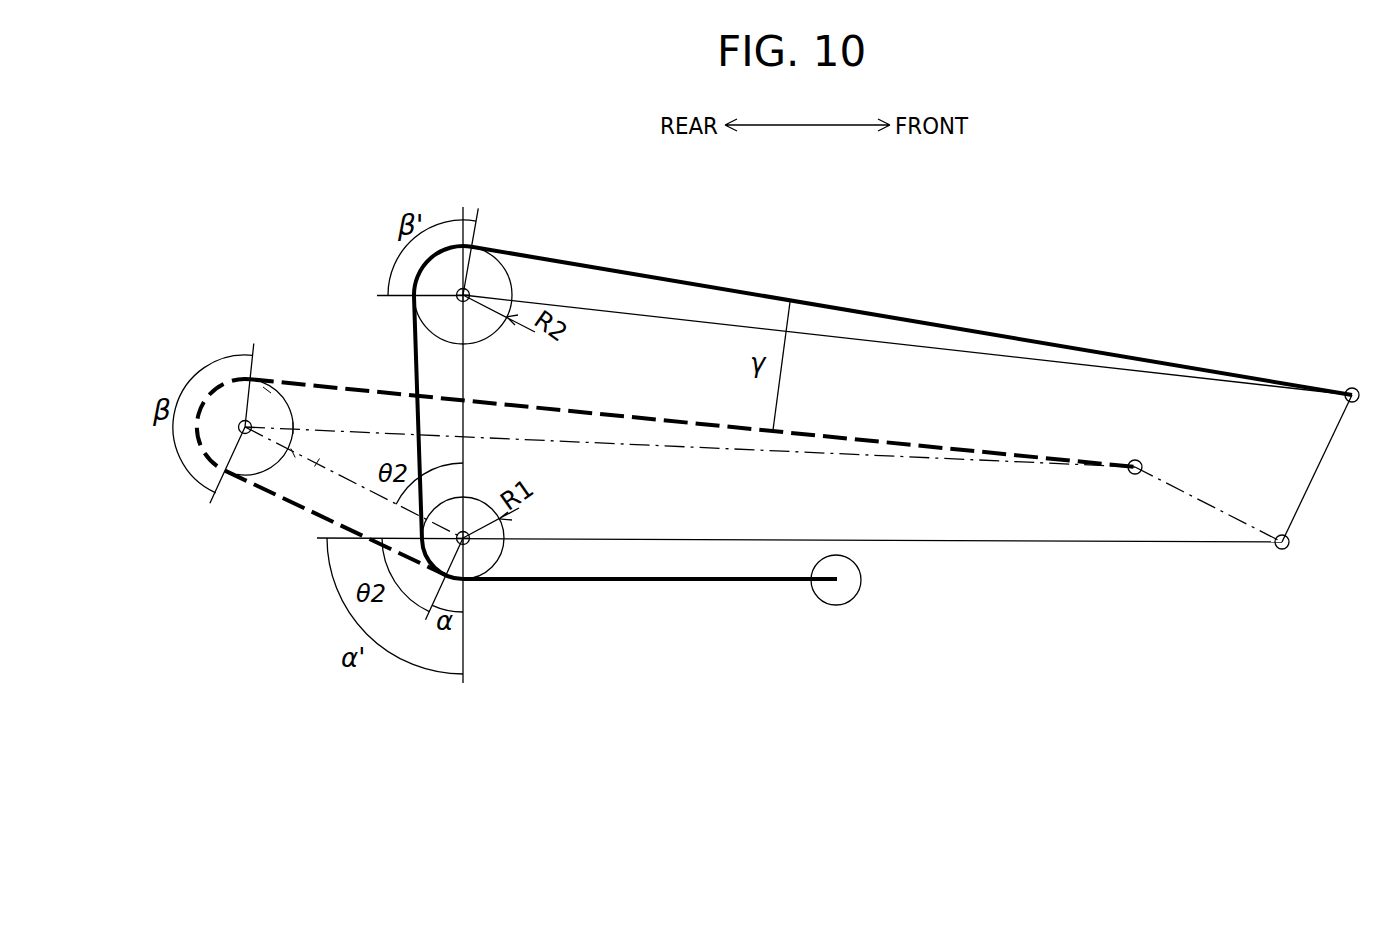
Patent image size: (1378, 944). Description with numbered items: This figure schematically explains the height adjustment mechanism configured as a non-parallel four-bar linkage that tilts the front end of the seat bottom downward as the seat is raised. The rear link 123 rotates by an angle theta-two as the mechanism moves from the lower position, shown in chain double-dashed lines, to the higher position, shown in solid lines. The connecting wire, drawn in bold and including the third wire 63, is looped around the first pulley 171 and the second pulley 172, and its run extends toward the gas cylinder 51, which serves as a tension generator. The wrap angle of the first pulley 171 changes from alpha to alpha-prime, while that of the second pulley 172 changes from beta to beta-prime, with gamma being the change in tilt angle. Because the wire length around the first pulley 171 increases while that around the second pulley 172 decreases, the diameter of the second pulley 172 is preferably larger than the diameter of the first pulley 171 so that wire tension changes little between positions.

The third wire 63 is at (685, 420).
The second pulley 172 is at (437, 312).
The first pulley 171 is at (487, 557).
The rear link 123 is at (465, 373).
The gas cylinder 51 is at (854, 598).